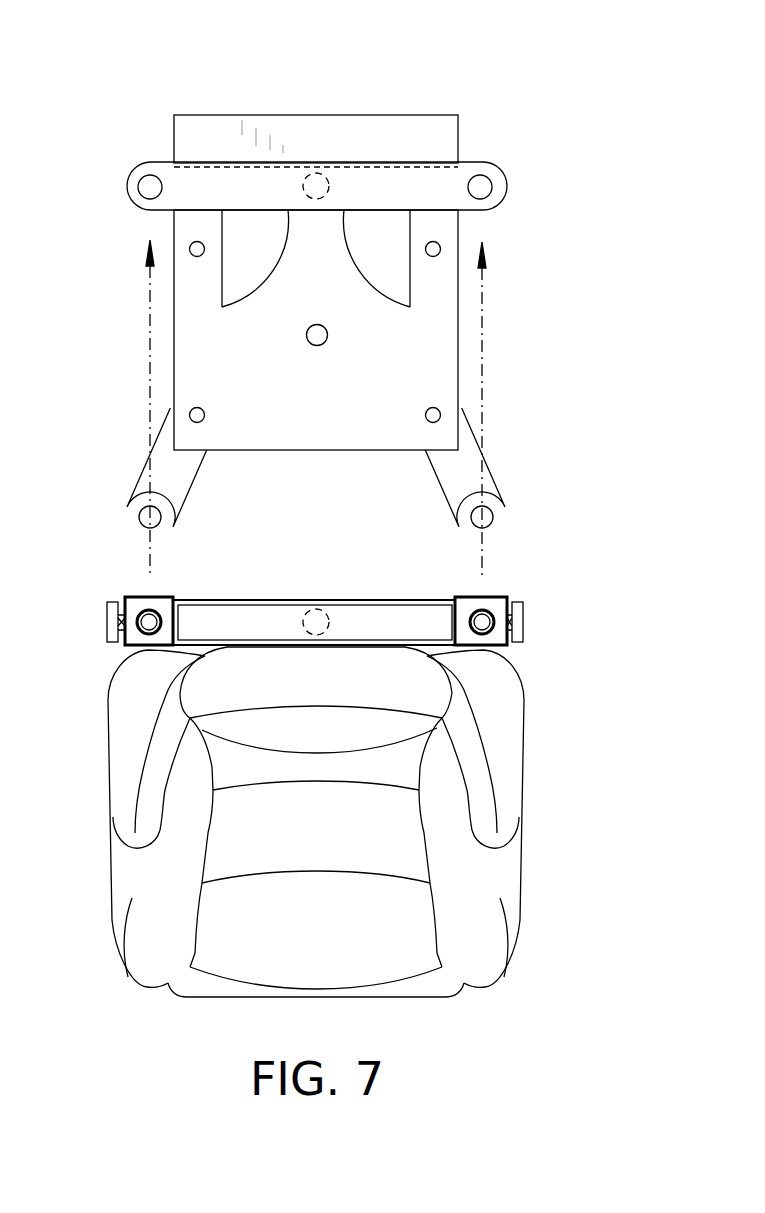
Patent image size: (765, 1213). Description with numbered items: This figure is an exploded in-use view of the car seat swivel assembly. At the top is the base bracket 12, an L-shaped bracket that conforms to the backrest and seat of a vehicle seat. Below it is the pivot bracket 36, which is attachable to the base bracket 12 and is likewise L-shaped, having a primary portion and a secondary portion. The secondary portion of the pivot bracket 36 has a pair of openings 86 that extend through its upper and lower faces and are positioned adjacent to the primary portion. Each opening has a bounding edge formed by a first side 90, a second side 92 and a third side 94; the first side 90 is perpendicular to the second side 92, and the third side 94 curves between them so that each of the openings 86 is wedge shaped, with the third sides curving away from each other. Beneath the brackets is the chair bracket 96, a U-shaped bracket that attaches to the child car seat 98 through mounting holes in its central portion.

The base bracket 12 is at (465, 88).
The first side 90 is at (263, 210).
The second side 92 is at (222, 236).
The openings 86 is at (222, 272).
The third side 94 is at (262, 272).
The pivot bracket 36 is at (480, 330).
The chair bracket 96 is at (248, 578).
The child car seat 98 is at (237, 300).